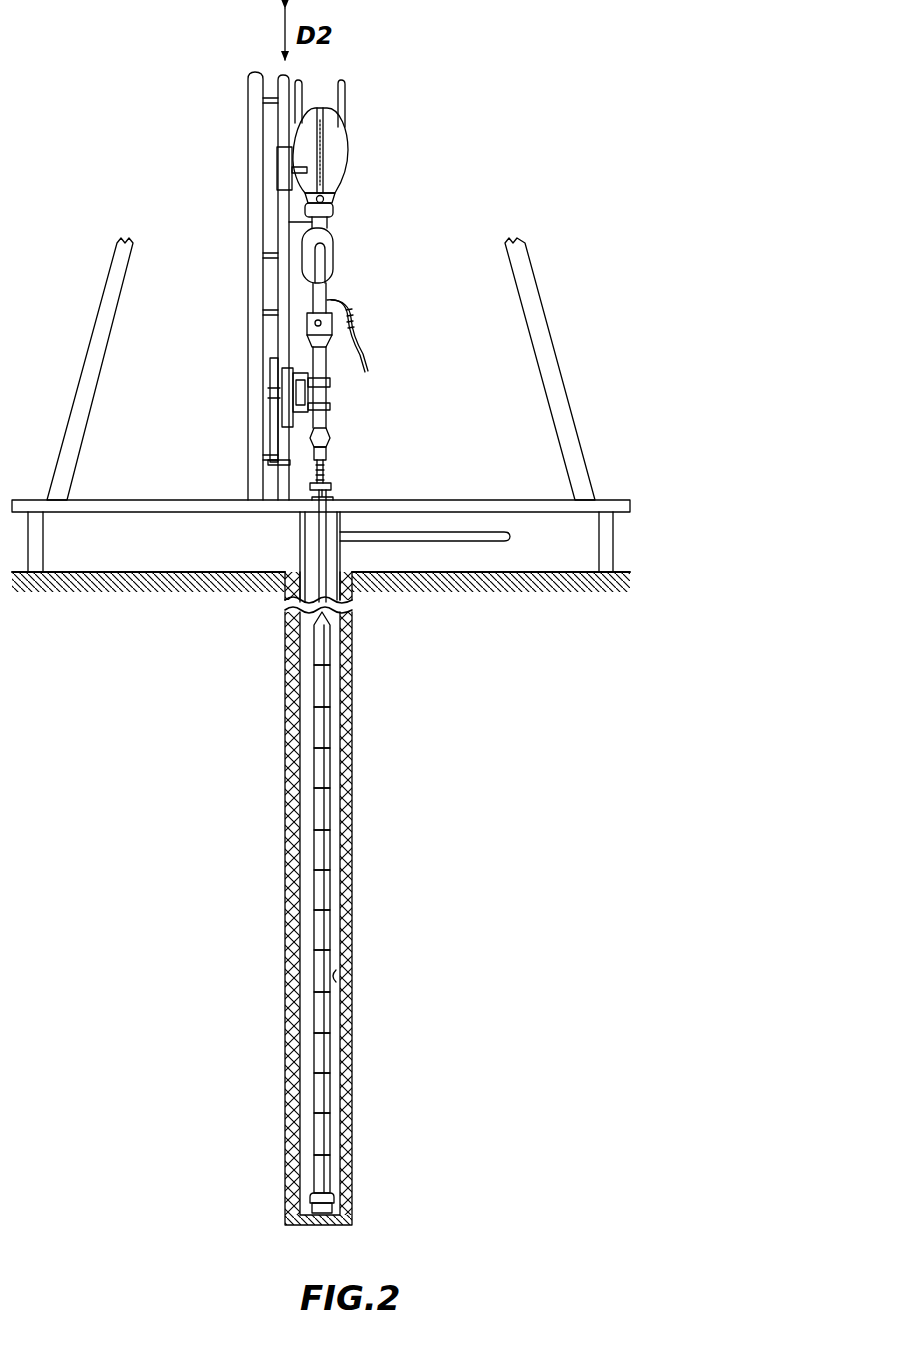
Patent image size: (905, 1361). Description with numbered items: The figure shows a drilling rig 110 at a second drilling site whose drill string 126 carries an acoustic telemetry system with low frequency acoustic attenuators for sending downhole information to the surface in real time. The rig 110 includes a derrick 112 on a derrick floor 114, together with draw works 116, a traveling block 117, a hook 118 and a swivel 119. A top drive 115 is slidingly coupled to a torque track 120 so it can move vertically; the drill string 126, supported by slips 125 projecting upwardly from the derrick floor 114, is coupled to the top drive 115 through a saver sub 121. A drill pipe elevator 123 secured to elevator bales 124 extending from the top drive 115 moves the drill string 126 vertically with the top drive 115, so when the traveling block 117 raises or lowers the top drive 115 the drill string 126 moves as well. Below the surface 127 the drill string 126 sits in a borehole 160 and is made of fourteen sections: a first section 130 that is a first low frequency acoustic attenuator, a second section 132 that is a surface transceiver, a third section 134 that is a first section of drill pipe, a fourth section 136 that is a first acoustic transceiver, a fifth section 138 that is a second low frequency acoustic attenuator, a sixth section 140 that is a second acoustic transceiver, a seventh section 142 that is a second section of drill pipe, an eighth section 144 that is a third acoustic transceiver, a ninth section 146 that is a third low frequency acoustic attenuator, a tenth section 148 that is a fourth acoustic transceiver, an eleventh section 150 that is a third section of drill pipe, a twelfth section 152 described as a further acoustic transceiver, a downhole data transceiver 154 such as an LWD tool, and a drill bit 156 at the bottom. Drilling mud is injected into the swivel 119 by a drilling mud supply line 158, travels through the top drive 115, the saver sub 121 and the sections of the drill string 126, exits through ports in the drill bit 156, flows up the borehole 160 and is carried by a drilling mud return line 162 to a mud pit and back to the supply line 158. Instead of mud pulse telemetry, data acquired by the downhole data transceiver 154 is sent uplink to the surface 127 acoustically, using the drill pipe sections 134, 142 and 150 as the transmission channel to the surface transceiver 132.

The drilling rig 110 is at (649, 159).
The derrick 112 is at (552, 335).
The derrick floor 114 is at (552, 500).
The top drive 115 is at (330, 396).
The draw works 116 is at (345, 97).
The traveling block 117 is at (348, 145).
The hook 118 is at (335, 200).
The swivel 119 is at (333, 265).
The torque track 120 is at (333, 215).
The saver sub 121 is at (325, 465).
The drill pipe elevator 123 is at (331, 487).
The elevator bales 124 is at (325, 477).
The slips 125 is at (315, 503).
The drill string 126 is at (292, 888).
The surface 127 is at (192, 618).
The first section 130 is at (328, 652).
The second section 132 is at (328, 688).
The third section 134 is at (313, 727).
The fourth section 136 is at (328, 765).
The fifth section 138 is at (313, 814).
The sixth section 140 is at (328, 847).
The seventh section 142 is at (328, 888).
The eighth section 144 is at (328, 930).
The ninth section 146 is at (313, 973).
The tenth section 148 is at (328, 1010).
The eleventh section 150 is at (313, 1060).
The twelfth section 152 is at (328, 1093).
The downhole data transceiver 154 is at (328, 1138).
The drill bit 156 is at (305, 1208).
The drilling mud supply line 158 is at (358, 338).
The borehole 160 is at (340, 985).
The drilling mud return line 162 is at (398, 543).